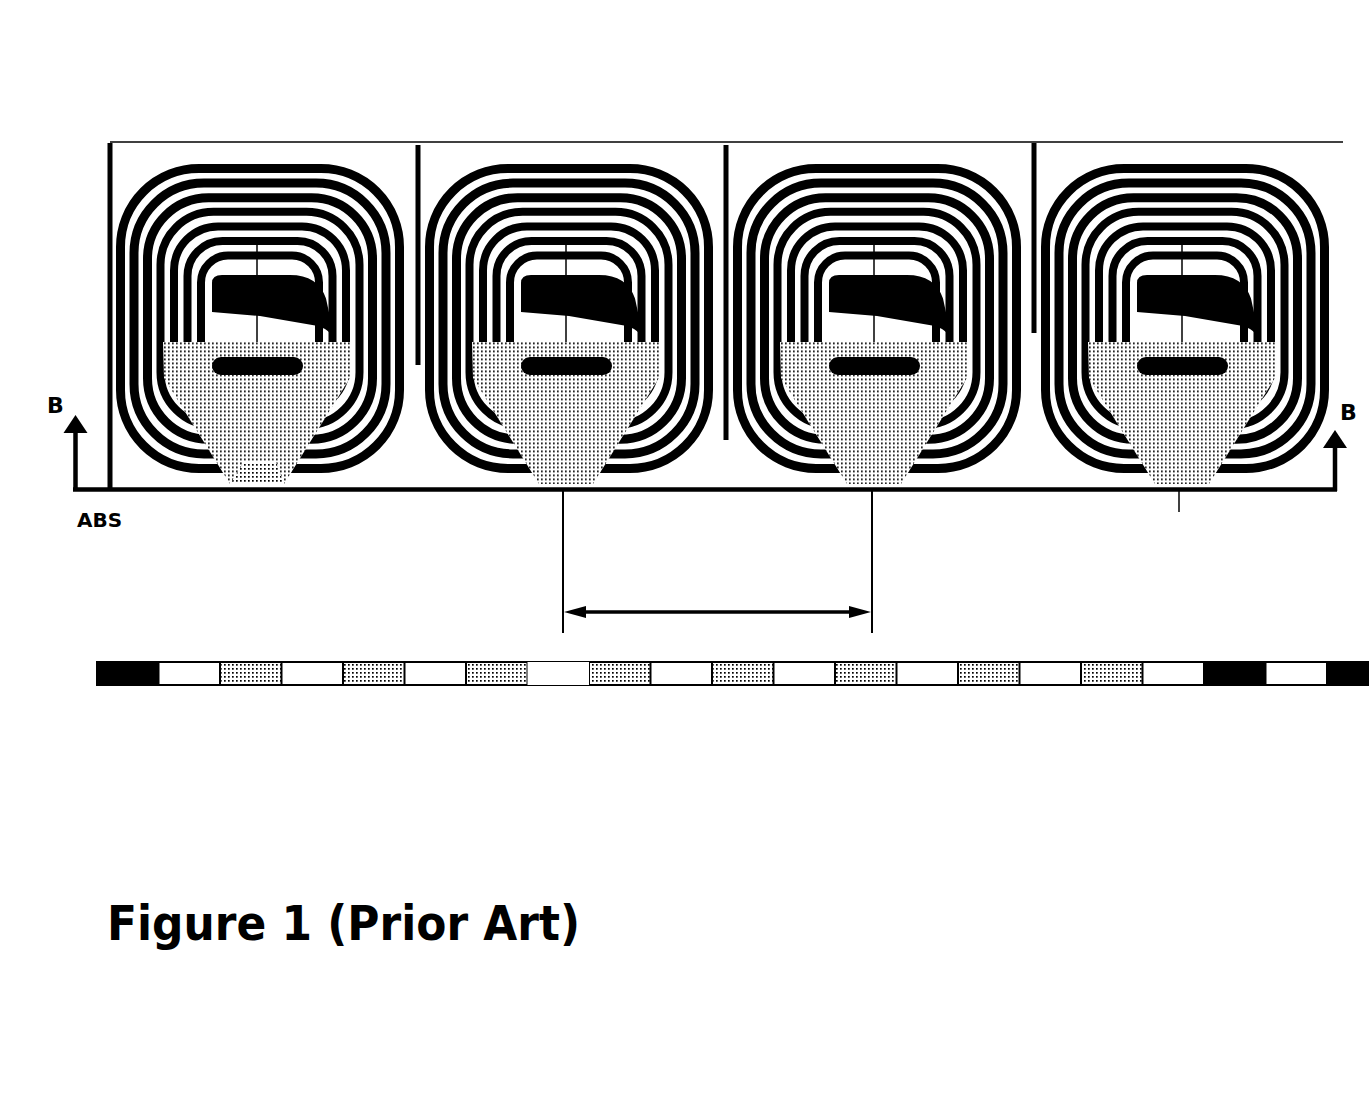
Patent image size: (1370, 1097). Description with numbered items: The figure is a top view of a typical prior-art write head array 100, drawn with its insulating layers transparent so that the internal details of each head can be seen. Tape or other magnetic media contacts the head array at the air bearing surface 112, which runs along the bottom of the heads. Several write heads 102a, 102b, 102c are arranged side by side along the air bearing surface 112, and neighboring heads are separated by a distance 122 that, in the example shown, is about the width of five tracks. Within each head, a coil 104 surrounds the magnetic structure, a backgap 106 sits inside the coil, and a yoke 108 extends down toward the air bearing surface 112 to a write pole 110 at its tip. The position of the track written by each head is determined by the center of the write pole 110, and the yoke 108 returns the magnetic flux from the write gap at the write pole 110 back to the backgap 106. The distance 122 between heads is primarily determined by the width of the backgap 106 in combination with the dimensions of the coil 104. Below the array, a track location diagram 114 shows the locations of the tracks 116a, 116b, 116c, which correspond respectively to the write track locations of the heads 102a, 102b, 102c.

The write head array 100 is at (857, 130).
The write head 102a is at (277, 352).
The write head 102b is at (512, 154).
The write head 102c is at (807, 162).
The coil 104 is at (263, 165).
The backgap 106 is at (300, 375).
The yoke 108 is at (268, 437).
The write pole 110 is at (250, 482).
The air bearing surface 112 is at (148, 490).
The track location diagram 114 is at (732, 719).
The track 116a is at (253, 672).
The track 116b is at (558, 673).
The track 116c is at (867, 672).
The distance 122 is at (717, 568).